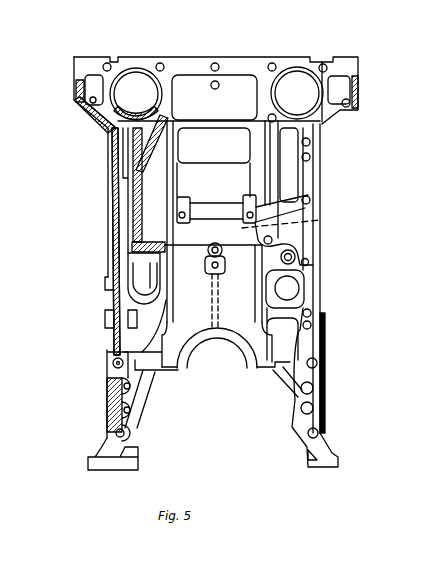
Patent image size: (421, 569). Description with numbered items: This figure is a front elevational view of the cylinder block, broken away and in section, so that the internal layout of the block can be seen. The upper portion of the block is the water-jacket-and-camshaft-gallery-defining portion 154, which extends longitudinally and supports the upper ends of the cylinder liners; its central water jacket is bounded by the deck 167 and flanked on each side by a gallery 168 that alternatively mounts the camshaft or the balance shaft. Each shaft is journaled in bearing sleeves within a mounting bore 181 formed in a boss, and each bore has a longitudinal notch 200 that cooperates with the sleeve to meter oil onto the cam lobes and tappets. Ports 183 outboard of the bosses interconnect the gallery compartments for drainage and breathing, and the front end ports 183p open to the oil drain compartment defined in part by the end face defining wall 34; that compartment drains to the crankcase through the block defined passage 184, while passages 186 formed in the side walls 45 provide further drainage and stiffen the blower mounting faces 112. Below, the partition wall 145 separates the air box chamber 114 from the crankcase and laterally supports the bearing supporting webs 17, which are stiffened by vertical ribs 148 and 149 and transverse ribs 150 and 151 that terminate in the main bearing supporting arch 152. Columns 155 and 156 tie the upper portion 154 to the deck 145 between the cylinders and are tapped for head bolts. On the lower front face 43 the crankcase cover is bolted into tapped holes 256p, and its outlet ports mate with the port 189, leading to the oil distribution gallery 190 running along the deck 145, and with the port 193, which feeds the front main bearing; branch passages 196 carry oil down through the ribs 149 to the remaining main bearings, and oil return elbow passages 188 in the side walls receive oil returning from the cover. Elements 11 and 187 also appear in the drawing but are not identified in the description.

The engine block 11 is at (313, 177).
The bearing supporting web 17 is at (225, 332).
The end face defining wall 34 is at (320, 124).
The lower front face of the cylinder block 43 is at (306, 298).
The side wall 45 is at (314, 347).
The blower mounting face 112 is at (113, 227).
The air box chamber 114 is at (150, 203).
The partition wall or deck 145 is at (126, 257).
The vertical rib 148 is at (173, 268).
The vertical rib 149 is at (173, 308).
The transverse rib 150 is at (152, 375).
The transverse rib 151 is at (138, 387).
The main bearing supporting arch 152 is at (250, 358).
The water-jacket-and-camshaft-gallery-defining portion 154 is at (202, 60).
The column 155 is at (168, 190).
The column 156 is at (267, 170).
The deck 167 is at (162, 152).
The gallery 168 is at (128, 102).
The mounting bore 181 is at (136, 68).
The port 183 is at (93, 103).
The front end port 183p is at (93, 74).
The block defined passage 184 is at (299, 229).
The passage 186 is at (127, 180).
The rib 187 is at (137, 143).
The oil return elbow passage 188 is at (124, 387).
The port 189 is at (296, 250).
The oil distribution gallery 190 is at (310, 263).
The port 193 is at (242, 226).
The branch passage 196 is at (220, 327).
The notch or groove 200 is at (155, 66).
The tapped hole 256p is at (113, 364).